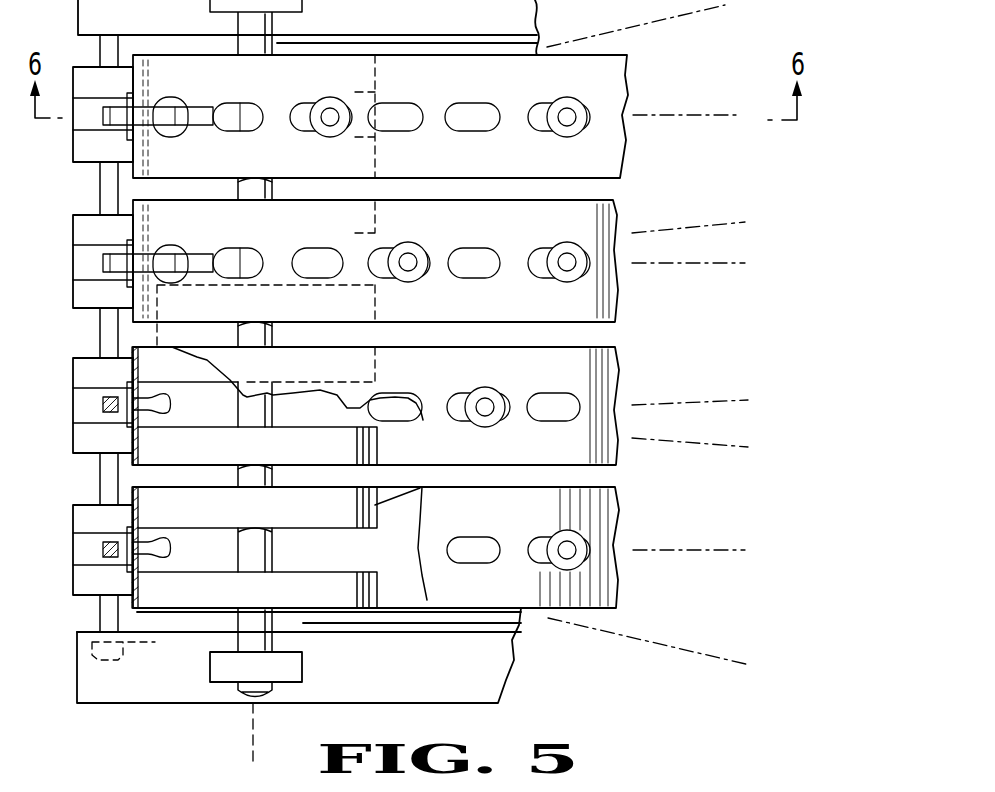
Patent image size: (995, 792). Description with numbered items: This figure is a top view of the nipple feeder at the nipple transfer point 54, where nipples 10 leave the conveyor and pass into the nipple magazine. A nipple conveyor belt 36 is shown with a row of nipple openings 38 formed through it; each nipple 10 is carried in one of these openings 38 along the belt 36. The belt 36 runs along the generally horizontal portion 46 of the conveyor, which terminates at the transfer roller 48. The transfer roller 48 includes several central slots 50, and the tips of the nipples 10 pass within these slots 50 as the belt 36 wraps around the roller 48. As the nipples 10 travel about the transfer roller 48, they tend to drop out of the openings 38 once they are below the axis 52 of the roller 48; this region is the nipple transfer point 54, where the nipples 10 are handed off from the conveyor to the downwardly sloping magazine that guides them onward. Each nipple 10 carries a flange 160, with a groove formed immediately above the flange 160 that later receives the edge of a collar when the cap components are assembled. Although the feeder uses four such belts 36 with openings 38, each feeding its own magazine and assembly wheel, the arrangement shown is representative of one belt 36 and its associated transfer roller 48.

The nipple 10 is at (563, 242).
The nipple conveyor belt 36 is at (627, 70).
The nipple opening 38 is at (540, 395).
The generally horizontal portion 46 is at (531, 460).
The transfer roller 48 is at (357, 418).
The central slot 50 is at (375, 542).
The axis 52 is at (252, 733).
The nipple transfer point 54 is at (135, 660).
The flange 160 is at (130, 568).